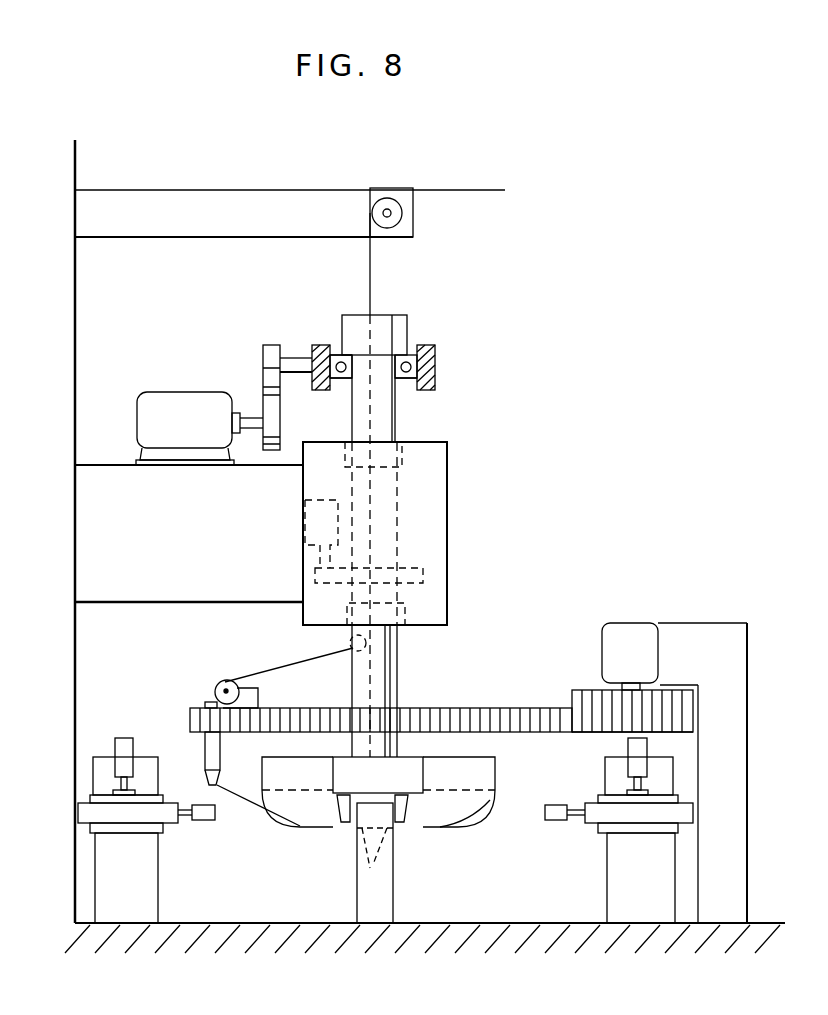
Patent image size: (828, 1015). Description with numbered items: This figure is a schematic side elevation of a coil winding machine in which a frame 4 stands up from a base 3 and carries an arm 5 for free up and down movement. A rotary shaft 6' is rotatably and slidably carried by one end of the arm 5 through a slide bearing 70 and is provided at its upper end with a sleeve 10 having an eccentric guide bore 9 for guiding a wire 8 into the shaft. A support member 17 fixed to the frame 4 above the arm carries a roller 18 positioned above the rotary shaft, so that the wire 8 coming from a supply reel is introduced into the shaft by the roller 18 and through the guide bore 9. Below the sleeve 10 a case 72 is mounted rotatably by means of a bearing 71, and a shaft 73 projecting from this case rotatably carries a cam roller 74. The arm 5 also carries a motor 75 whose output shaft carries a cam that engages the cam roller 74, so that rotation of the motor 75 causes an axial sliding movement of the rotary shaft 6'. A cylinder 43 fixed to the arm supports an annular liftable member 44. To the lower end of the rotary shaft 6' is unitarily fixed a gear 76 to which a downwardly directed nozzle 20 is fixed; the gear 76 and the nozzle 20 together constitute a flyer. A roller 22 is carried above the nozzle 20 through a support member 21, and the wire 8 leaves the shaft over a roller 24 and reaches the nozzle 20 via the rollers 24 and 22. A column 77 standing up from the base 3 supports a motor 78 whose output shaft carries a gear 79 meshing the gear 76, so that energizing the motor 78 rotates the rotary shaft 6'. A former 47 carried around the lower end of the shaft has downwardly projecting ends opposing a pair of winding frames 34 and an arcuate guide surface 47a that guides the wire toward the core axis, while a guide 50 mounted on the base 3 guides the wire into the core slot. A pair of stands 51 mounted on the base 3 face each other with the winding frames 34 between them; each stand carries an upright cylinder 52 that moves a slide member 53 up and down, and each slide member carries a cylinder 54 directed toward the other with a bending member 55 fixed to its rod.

The base 3 is at (184, 935).
The frame 4 is at (78, 345).
The arm 5 is at (156, 604).
The rotary shaft 6' is at (395, 691).
The wire 8 is at (264, 672).
The guide bore 9 is at (362, 335).
The sleeve 10 is at (407, 330).
The support member 17 is at (167, 240).
The roller 18 is at (400, 218).
The nozzle 20 is at (205, 753).
The support member 21 is at (258, 696).
The roller 22 is at (222, 680).
The roller 24 is at (350, 643).
The winding frames 34 is at (372, 868).
The cylinder 43 is at (305, 512).
The liftable member 44 is at (315, 576).
The former 47 is at (495, 772).
The guide surface 47a is at (480, 826).
The guide 50 is at (393, 900).
The stands 51 is at (95, 890).
The cylinder 52 is at (115, 760).
The slide member 53 is at (95, 800).
The cylinder 54 is at (80, 812).
The bending member 55 is at (206, 821).
The slide bearing 70 is at (415, 450).
The bearing 71 is at (330, 345).
The case 72 is at (437, 368).
The shaft 73 is at (290, 374).
The cam roller 74 is at (263, 352).
The motor 75 is at (182, 392).
The gear 76 is at (265, 410).
The column 77 is at (720, 636).
The motor 78 is at (668, 615).
The gear 79 is at (595, 690).